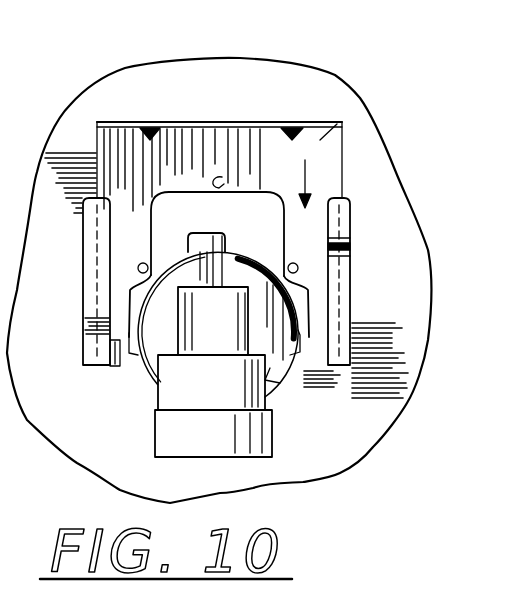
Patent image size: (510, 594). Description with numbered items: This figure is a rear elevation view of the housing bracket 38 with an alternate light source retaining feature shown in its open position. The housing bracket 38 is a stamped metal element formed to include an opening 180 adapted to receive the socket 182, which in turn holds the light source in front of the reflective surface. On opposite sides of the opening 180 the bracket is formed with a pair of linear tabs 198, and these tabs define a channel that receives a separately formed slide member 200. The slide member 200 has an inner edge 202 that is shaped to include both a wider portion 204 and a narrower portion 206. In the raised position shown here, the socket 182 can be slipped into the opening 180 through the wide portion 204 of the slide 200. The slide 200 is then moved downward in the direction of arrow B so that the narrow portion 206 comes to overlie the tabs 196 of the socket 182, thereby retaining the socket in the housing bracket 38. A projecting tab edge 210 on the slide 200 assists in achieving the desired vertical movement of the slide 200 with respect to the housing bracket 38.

The housing bracket 38 is at (397, 204).
The slide member 200 is at (344, 121).
The projecting tab edge 210 is at (137, 125).
The inner edge 202 is at (186, 222).
The arrow B is at (308, 183).
The narrower portion 206 is at (152, 241).
The wider portion 204 is at (128, 303).
The linear tabs 198 is at (90, 282).
The tabs 196 is at (148, 378).
The opening 180 is at (272, 385).
The socket 182 is at (182, 436).